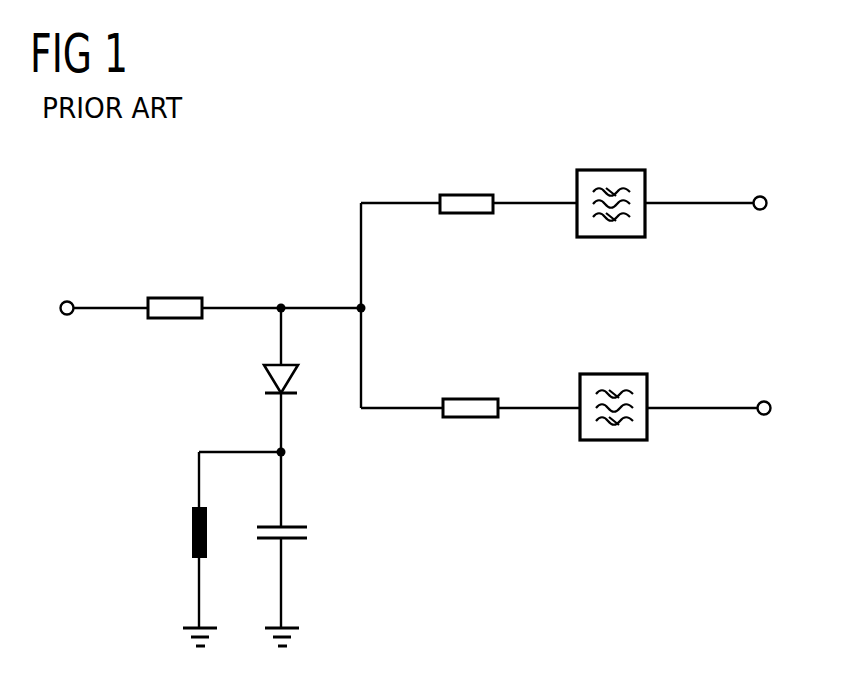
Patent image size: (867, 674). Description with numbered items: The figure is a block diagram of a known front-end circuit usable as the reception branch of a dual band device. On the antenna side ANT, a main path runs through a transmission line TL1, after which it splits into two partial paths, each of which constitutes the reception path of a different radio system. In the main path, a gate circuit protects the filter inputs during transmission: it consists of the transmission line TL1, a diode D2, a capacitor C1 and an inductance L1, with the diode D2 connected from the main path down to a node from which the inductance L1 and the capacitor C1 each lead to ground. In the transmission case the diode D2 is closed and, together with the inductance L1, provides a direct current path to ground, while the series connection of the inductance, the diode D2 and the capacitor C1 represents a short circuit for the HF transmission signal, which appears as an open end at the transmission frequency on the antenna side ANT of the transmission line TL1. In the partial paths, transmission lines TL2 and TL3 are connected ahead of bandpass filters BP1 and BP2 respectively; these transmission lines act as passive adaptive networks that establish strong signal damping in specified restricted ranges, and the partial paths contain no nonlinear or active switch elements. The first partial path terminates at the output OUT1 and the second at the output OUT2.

The antenna side ANT is at (66, 296).
The transmission line TL1 is at (174, 296).
The transmission line TL2 is at (469, 398).
The transmission line TL3 is at (465, 194).
The bandpass filter BP1 is at (612, 372).
The bandpass filter BP2 is at (610, 168).
The output OUT1 is at (764, 399).
The output OUT2 is at (760, 194).
The diode D2 is at (266, 383).
The inductance L1 is at (190, 530).
The capacitor C1 is at (313, 535).